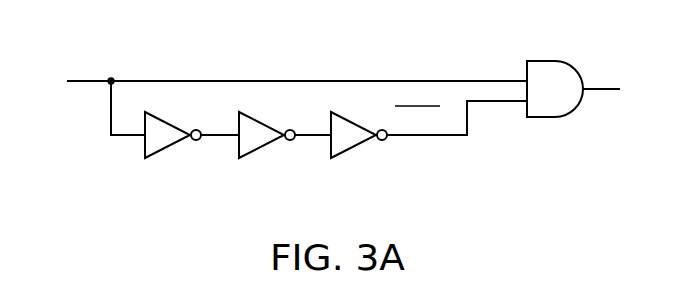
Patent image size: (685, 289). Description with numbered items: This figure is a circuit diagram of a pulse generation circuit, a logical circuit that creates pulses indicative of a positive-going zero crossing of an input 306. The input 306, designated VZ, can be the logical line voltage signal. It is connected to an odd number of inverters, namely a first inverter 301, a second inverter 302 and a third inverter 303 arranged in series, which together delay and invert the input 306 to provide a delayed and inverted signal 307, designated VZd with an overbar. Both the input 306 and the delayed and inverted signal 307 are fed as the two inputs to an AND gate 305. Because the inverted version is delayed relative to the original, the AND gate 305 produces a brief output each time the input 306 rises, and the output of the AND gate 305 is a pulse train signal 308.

The first inverter 301 is at (160, 158).
The second inverter 302 is at (258, 158).
The third inverter 303 is at (348, 158).
The AND gate 305 is at (558, 118).
The input 306 is at (88, 81).
The delayed and inverted signal 307 is at (450, 136).
The pulse train signal 308 is at (597, 88).